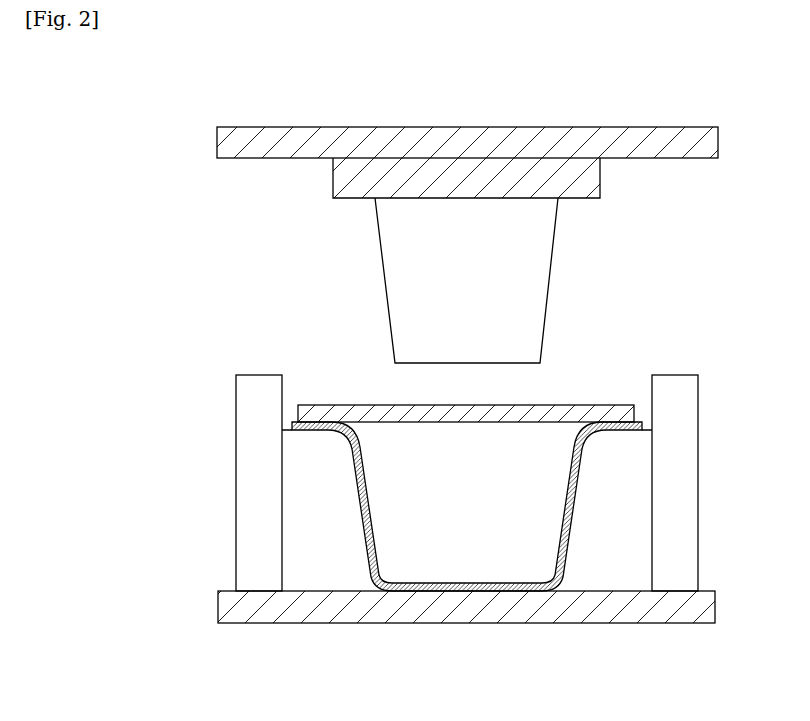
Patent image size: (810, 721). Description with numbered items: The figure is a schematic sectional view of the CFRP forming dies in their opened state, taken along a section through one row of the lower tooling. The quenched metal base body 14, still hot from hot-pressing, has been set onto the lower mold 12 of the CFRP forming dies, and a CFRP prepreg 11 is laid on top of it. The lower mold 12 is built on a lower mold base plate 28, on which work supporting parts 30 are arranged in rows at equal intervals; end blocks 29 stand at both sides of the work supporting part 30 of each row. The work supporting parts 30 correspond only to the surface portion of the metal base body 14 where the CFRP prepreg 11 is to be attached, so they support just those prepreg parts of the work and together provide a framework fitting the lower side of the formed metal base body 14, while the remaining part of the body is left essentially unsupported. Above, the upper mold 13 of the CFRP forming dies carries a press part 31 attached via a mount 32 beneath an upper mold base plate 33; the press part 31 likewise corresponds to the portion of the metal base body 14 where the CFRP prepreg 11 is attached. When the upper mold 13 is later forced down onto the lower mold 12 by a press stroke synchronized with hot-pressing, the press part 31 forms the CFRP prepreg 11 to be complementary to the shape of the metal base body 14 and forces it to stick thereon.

The CFRP prepreg 11 is at (362, 408).
The lower mold of CFRP forming dies 12 is at (486, 526).
The upper mold of CFRP forming dies 13 is at (502, 204).
The metal base body 14 is at (370, 505).
The lower mold base plate 28 is at (710, 605).
The end block 29 is at (257, 463).
The work supporting part 30 is at (301, 518).
The press part 31 is at (530, 272).
The mount 32 is at (597, 178).
The upper mold base plate 33 is at (722, 141).